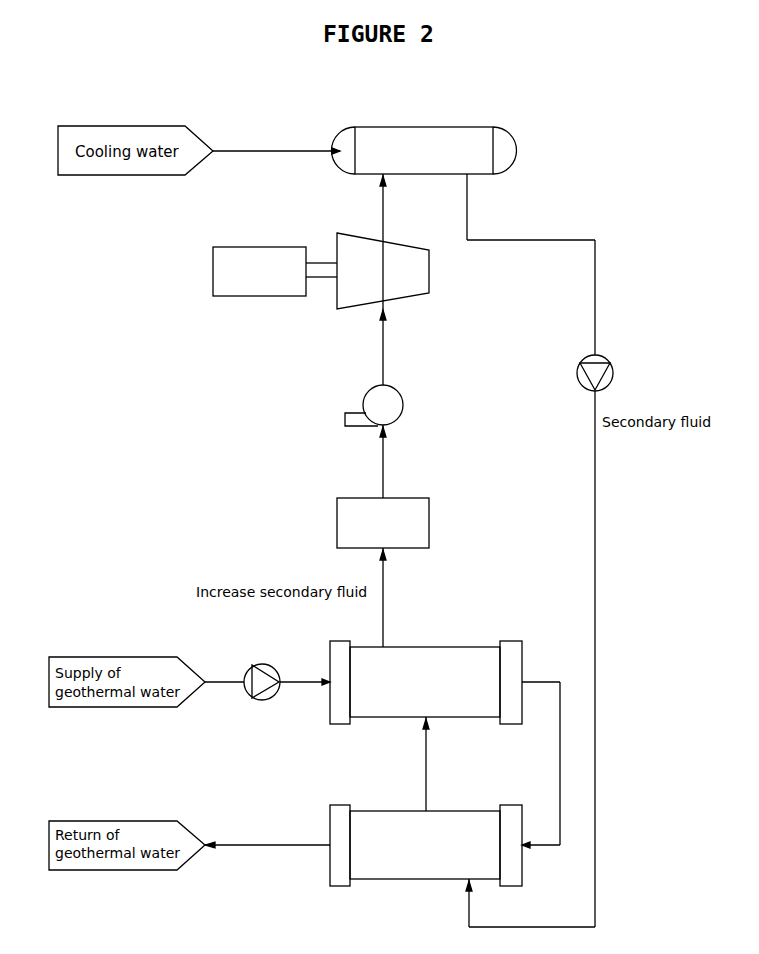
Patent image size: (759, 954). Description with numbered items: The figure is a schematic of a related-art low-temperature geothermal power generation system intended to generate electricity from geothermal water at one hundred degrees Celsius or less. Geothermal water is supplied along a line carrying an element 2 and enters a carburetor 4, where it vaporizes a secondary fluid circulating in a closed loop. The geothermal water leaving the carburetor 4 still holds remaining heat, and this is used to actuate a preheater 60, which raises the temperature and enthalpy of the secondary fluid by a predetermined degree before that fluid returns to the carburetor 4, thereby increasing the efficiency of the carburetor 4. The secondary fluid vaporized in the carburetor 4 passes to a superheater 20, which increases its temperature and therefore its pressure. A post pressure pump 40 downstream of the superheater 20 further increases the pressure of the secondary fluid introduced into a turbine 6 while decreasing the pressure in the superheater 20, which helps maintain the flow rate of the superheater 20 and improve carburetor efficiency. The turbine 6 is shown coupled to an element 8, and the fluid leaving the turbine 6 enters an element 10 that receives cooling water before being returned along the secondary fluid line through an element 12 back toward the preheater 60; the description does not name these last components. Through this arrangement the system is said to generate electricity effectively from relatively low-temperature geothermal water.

The geothermal water supply pump 2 is at (270, 667).
The carburetor 4 is at (460, 647).
The turbine 6 is at (405, 243).
The generator 8 is at (260, 247).
The condenser 10 is at (460, 127).
The secondary fluid circulation pump 12 is at (605, 356).
The superheater 20 is at (415, 498).
The post pressure pump 40 is at (392, 387).
The preheater 60 is at (460, 811).